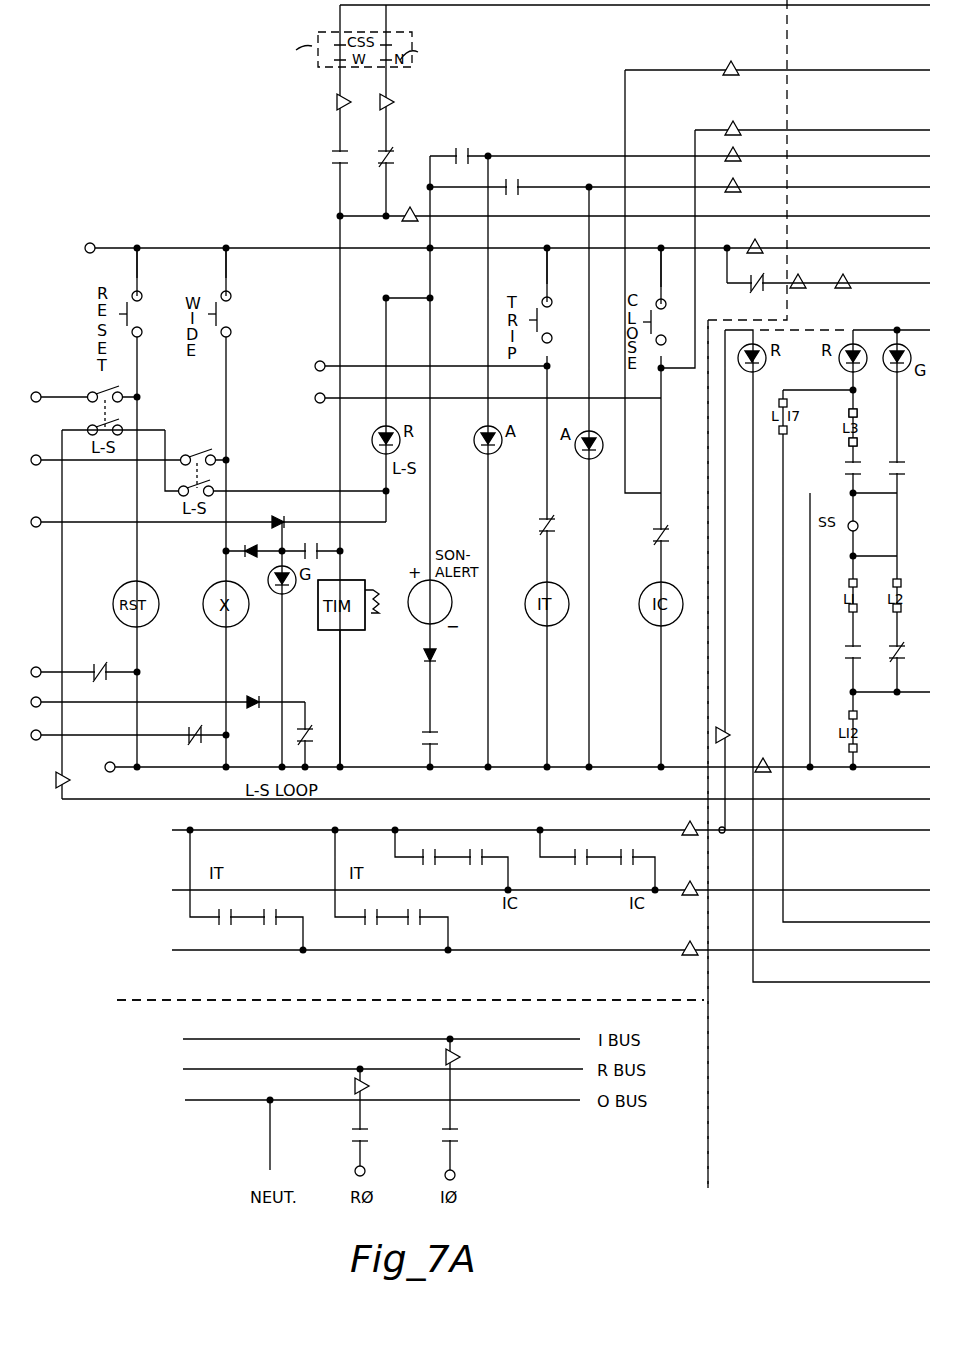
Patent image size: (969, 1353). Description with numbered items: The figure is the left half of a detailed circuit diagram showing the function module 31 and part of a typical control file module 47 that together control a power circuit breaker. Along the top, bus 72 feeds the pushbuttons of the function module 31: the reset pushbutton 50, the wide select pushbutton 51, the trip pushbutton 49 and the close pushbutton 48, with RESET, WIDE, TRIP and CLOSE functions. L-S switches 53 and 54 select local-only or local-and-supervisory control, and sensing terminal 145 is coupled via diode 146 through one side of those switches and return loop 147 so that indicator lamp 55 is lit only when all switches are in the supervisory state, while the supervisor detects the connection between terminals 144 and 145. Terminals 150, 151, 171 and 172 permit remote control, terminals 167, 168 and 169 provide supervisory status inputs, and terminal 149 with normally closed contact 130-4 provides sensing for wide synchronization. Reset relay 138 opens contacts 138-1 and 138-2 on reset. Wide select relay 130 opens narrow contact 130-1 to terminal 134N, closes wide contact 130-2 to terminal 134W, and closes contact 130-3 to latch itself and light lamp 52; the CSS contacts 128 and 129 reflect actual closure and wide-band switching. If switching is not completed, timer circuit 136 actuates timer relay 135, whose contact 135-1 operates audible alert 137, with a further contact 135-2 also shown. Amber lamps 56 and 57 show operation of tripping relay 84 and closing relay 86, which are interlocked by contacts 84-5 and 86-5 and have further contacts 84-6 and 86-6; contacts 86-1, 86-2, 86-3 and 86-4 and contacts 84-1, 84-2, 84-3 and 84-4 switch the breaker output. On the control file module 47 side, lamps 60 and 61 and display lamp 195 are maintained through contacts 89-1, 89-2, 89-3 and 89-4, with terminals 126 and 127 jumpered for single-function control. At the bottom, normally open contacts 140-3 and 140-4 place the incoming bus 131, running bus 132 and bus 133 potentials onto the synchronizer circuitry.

The contacts 129 is at (285, 51).
The contacts 128 is at (430, 50).
The terminal 134W is at (337, 102).
The terminal 134N is at (392, 102).
The normally open contact 130-2 is at (330, 158).
The normally closed contact 130-1 is at (394, 157).
The relay contact 84-6 is at (471, 156).
The relay contact 86-6 is at (520, 187).
The bus 72 is at (126, 248).
The reset pushbutton 50 is at (178, 290).
The wide select pushbutton 51 is at (266, 290).
The trip pushbutton 49 is at (550, 315).
The close pushbutton 48 is at (651, 304).
The normally closed reset contact 138-1 is at (760, 290).
The lamp 60 is at (854, 340).
The lamp 61 is at (926, 320).
The terminal 150 is at (58, 380).
The L-S switch 54 is at (106, 394).
The terminal 171 is at (318, 366).
The terminal 172 is at (318, 397).
The terminal 151 is at (40, 444).
The L-S switch 53 is at (200, 456).
The indicator lamp 55 is at (372, 442).
The amber lamp 56 is at (492, 452).
The amber lamp 57 is at (604, 440).
The display lamp 195 is at (767, 362).
The sensing terminal 145 is at (38, 522).
The diode 146 is at (278, 514).
The relay contact 130-3 is at (322, 556).
The timer relay 135 is at (340, 580).
The relay contact 86-5 is at (556, 534).
The relay contact 84-5 is at (658, 540).
The relay contact 89-1 is at (845, 472).
The relay contact 89-2 is at (912, 469).
The terminal 169 is at (858, 529).
The reset relay 138 is at (119, 582).
The wide select relay 130 is at (209, 584).
The lamp 52 is at (282, 600).
The audible alert system 137 is at (386, 618).
The timer circuit 136 is at (342, 630).
The tripping relay 84 is at (544, 626).
The closing relay 86 is at (658, 626).
The terminal 126 is at (878, 413).
The terminal 127 is at (881, 442).
The relay contact 89-3 is at (899, 654).
The relay contact 89-4 is at (868, 661).
The terminal 167 is at (40, 671).
The reset relay contact 138-2 is at (108, 666).
The terminal 168 is at (42, 700).
The normally closed contact 130-4 is at (206, 696).
The timer relay contact 135-2 is at (314, 724).
The timer relay contact 135-1 is at (422, 736).
The terminal 149 is at (40, 738).
The terminal 144 is at (116, 770).
The return loop 147 is at (158, 802).
The closing relay contact 86-2 is at (508, 832).
The closing relay contact 86-3 is at (583, 854).
The closing relay contact 86-1 is at (427, 866).
The closing relay contact 86-4 is at (628, 872).
The tripping relay contact 84-1 is at (226, 928).
The tripping relay contact 84-2 is at (270, 928).
The tripping relay contact 84-3 is at (372, 928).
The tripping relay contact 84-4 is at (414, 928).
The incoming bus 131 is at (188, 1039).
The running bus 132 is at (188, 1069).
The bus 133 is at (188, 1100).
The normally open contact 140-3 is at (354, 1134).
The normally open contact 140-4 is at (460, 1136).
The function module 31 is at (88, 936).
The control file module 47 is at (806, 1107).